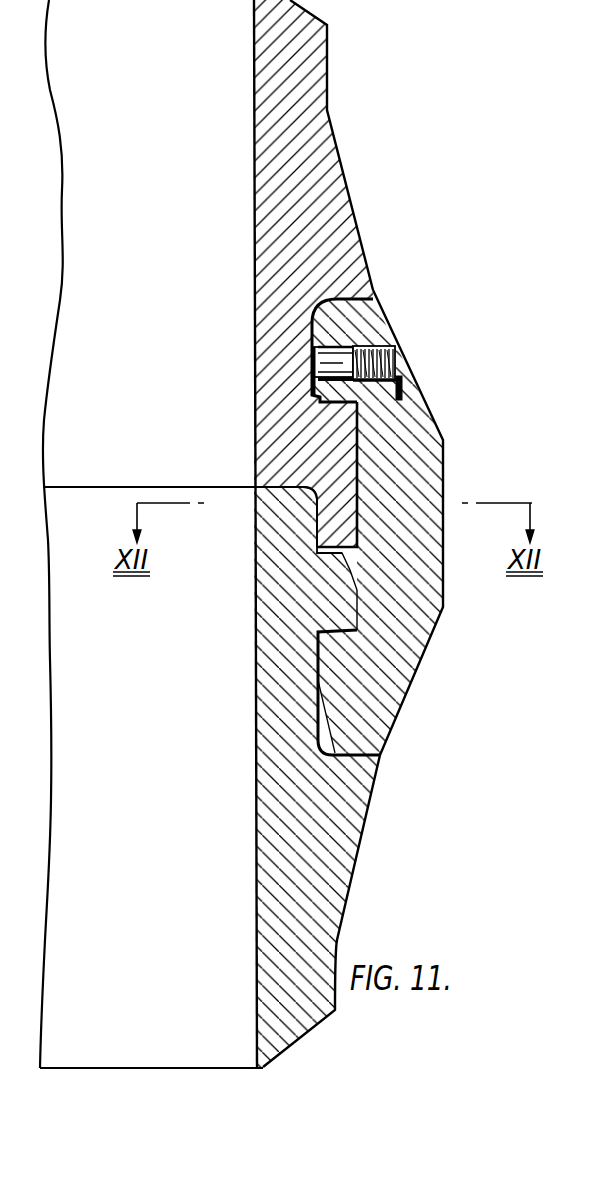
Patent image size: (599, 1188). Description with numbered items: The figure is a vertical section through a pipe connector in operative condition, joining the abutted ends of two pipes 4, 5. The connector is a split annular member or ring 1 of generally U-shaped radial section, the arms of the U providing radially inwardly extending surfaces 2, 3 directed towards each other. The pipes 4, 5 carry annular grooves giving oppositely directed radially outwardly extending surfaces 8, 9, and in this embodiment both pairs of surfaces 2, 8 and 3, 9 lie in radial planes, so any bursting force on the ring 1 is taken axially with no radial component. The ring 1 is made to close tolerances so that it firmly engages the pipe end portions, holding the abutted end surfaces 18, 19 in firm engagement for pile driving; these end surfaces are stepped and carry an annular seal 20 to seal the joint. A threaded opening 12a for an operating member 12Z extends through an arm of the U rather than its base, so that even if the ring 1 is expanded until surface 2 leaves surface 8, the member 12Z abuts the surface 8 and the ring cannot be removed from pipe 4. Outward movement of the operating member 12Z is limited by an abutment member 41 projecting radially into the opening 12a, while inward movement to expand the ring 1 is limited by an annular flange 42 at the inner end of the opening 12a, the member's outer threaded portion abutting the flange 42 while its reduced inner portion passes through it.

The split annular member or ring 1 is at (363, 703).
The radially inwardly extending surface 2 is at (355, 401).
The radially inwardly extending surface 3 is at (345, 622).
The pipe 4 is at (270, 188).
The pipe 5 is at (292, 798).
The radially outwardly extending surface 8 is at (310, 388).
The radially outwardly extending surface 9 is at (356, 648).
The threaded opening 12a is at (372, 347).
The operating member 12Z is at (392, 363).
The abutted end surface 18 is at (306, 511).
The abutted end surface 19 is at (293, 484).
The annular seal 20 is at (308, 514).
The abutment member 41 is at (402, 387).
The annular flange 42 is at (336, 351).